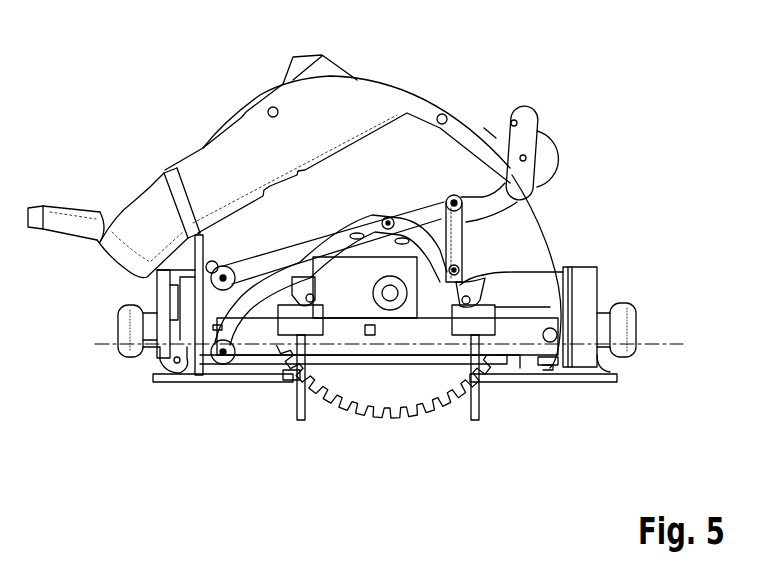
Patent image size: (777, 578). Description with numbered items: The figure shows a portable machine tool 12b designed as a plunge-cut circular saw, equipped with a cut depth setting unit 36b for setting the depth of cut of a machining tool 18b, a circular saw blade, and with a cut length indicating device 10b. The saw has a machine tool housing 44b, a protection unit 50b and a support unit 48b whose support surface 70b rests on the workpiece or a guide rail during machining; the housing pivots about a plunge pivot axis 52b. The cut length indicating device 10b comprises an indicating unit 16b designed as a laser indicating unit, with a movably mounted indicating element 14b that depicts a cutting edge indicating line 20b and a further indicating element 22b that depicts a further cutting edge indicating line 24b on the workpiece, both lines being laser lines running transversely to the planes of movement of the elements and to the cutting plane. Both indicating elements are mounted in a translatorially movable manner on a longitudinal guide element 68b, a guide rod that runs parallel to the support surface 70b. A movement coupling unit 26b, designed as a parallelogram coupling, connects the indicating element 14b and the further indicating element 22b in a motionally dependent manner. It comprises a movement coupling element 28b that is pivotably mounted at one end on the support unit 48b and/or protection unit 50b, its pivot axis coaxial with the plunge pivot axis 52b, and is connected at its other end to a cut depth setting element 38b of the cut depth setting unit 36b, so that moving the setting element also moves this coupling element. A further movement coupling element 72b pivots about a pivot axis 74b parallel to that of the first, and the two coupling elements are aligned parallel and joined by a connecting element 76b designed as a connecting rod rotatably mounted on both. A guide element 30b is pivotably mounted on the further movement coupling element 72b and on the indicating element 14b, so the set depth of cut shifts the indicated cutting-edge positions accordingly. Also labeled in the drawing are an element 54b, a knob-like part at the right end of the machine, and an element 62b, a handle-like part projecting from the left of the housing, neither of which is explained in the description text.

The cut length indicating device 10b is at (172, 398).
The portable machine tool 12b is at (193, 79).
The indicating element 14b is at (485, 330).
The indicating unit 16b is at (530, 447).
The machining tool 18b is at (384, 418).
The cutting edge indicating line 20b is at (468, 422).
The further indicating element 22b is at (288, 332).
The further cutting edge indicating line 24b is at (303, 420).
The movement coupling unit 26b is at (557, 233).
The movement coupling element 28b is at (540, 193).
The guide element 30b is at (583, 268).
The cut depth setting unit 36b is at (486, 95).
The cut depth setting element 38b is at (490, 132).
The machine tool housing 44b is at (245, 110).
The support unit 48b is at (170, 377).
The protection unit 50b is at (413, 128).
The plunge pivot axis 52b is at (208, 378).
The adjustment knob 54b is at (667, 341).
The auxiliary handle / suction connection 62b is at (126, 202).
The longitudinal guide element 68b is at (515, 322).
The support surface 70b is at (183, 382).
The further movement coupling element 72b is at (430, 212).
The pivot axis 74b is at (257, 258).
The connecting element 76b is at (444, 196).